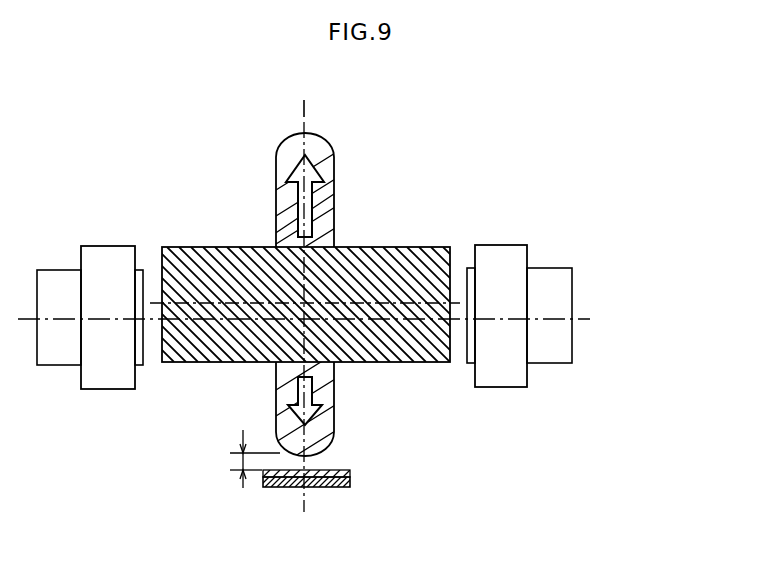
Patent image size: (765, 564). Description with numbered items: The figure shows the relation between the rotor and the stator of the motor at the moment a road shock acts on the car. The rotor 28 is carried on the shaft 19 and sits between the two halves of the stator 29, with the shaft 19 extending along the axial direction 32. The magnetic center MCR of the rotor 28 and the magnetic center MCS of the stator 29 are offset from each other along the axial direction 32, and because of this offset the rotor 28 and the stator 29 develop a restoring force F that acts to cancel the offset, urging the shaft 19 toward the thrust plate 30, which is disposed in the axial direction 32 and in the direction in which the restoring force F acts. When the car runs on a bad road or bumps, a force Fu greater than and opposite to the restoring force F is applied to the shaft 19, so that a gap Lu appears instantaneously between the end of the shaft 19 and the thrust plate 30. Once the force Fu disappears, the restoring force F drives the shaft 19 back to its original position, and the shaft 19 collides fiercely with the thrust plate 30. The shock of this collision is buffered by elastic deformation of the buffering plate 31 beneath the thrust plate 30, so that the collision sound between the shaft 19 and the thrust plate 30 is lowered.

The shaft 19 is at (320, 158).
The rotor 28 is at (183, 268).
The stator 29 is at (550, 267).
The thrust plate 30 is at (347, 473).
The buffering plate 31 is at (340, 487).
The axial direction 32 is at (304, 117).
The magnetic center of rotor MCR is at (418, 297).
The magnetic center of stator MCS is at (583, 318).
The restoring force F is at (313, 393).
The force Fu is at (295, 185).
The gap Lu is at (233, 459).